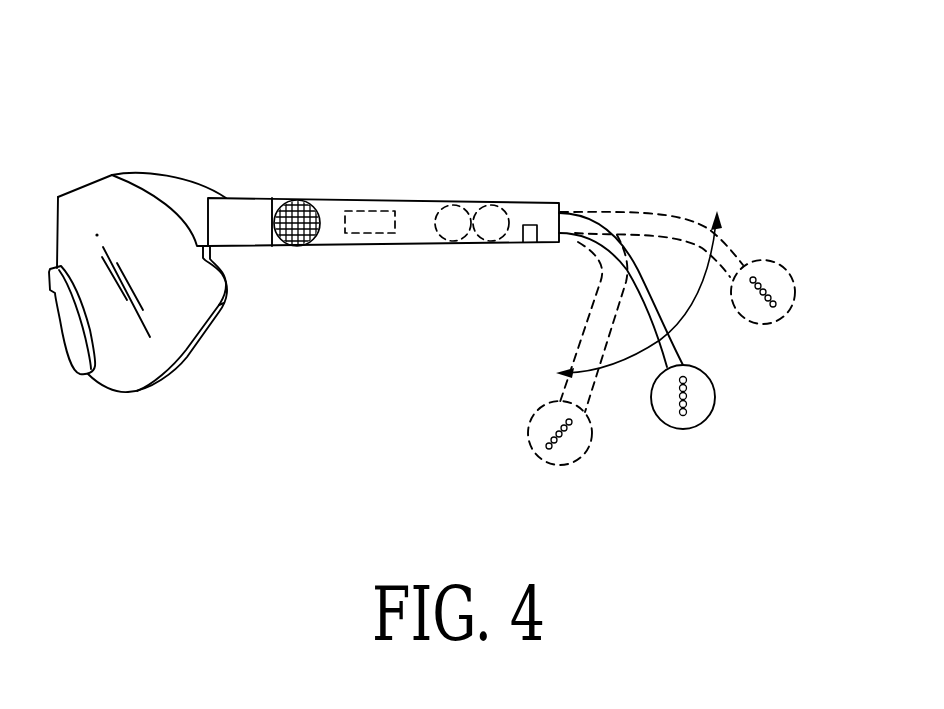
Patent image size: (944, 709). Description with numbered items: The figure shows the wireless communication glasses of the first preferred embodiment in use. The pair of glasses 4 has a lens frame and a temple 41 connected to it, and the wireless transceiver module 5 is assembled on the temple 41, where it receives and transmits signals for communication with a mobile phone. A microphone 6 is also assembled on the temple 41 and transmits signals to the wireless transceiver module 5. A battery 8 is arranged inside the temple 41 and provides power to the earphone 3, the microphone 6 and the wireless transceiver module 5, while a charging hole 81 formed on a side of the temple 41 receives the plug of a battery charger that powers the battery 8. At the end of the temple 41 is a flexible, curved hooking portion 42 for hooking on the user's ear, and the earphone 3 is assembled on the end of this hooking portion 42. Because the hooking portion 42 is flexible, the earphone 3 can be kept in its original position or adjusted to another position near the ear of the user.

The earphone 3 is at (705, 390).
The glasses 4 is at (82, 172).
The temple 41 is at (512, 202).
The hooking portion 42 is at (633, 252).
The wireless transceiver module 5 is at (373, 210).
The microphone 6 is at (288, 246).
The battery 8 is at (488, 230).
The charging hole 81 is at (531, 244).